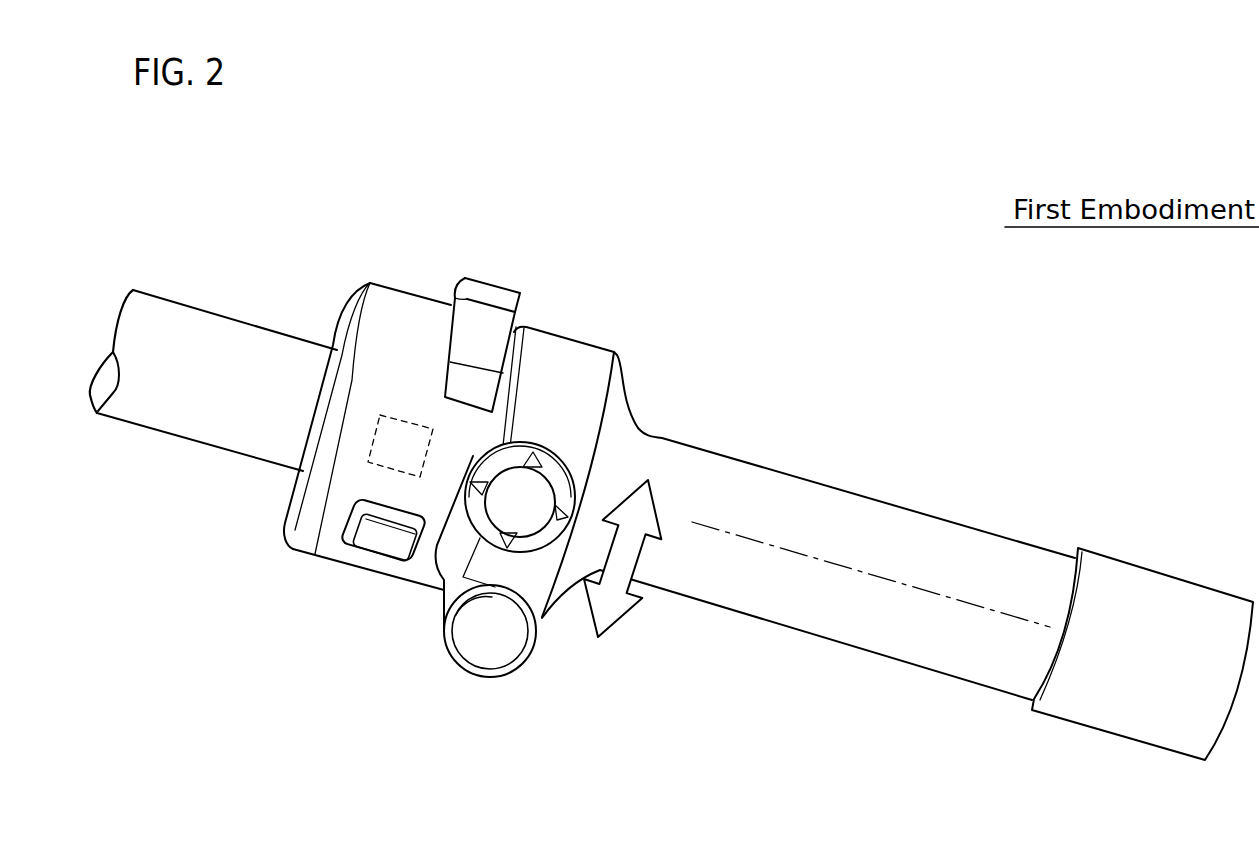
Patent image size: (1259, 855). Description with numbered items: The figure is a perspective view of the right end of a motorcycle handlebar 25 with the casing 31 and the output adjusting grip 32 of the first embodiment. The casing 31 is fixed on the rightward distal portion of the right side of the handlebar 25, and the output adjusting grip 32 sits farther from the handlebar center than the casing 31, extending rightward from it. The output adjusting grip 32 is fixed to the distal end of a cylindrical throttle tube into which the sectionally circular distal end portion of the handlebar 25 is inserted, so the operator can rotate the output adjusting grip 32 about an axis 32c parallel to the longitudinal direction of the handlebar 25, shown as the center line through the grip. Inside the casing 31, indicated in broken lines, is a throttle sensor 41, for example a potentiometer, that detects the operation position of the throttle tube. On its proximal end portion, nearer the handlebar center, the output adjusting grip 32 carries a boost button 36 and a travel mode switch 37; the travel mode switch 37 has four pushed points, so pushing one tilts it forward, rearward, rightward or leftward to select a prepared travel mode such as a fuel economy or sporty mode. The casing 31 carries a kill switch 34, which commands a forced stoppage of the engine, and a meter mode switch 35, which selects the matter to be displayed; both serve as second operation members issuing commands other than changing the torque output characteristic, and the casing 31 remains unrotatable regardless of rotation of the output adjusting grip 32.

The handlebar 25 is at (203, 430).
The casing 31 is at (428, 283).
The output adjusting grip 32 is at (897, 556).
The axis 32c is at (943, 587).
The kill switch 34 is at (497, 290).
The meter mode switch 35 is at (387, 550).
The boost button 36 is at (493, 647).
The travel mode switch 37 is at (532, 525).
The throttle sensor 41 is at (372, 440).